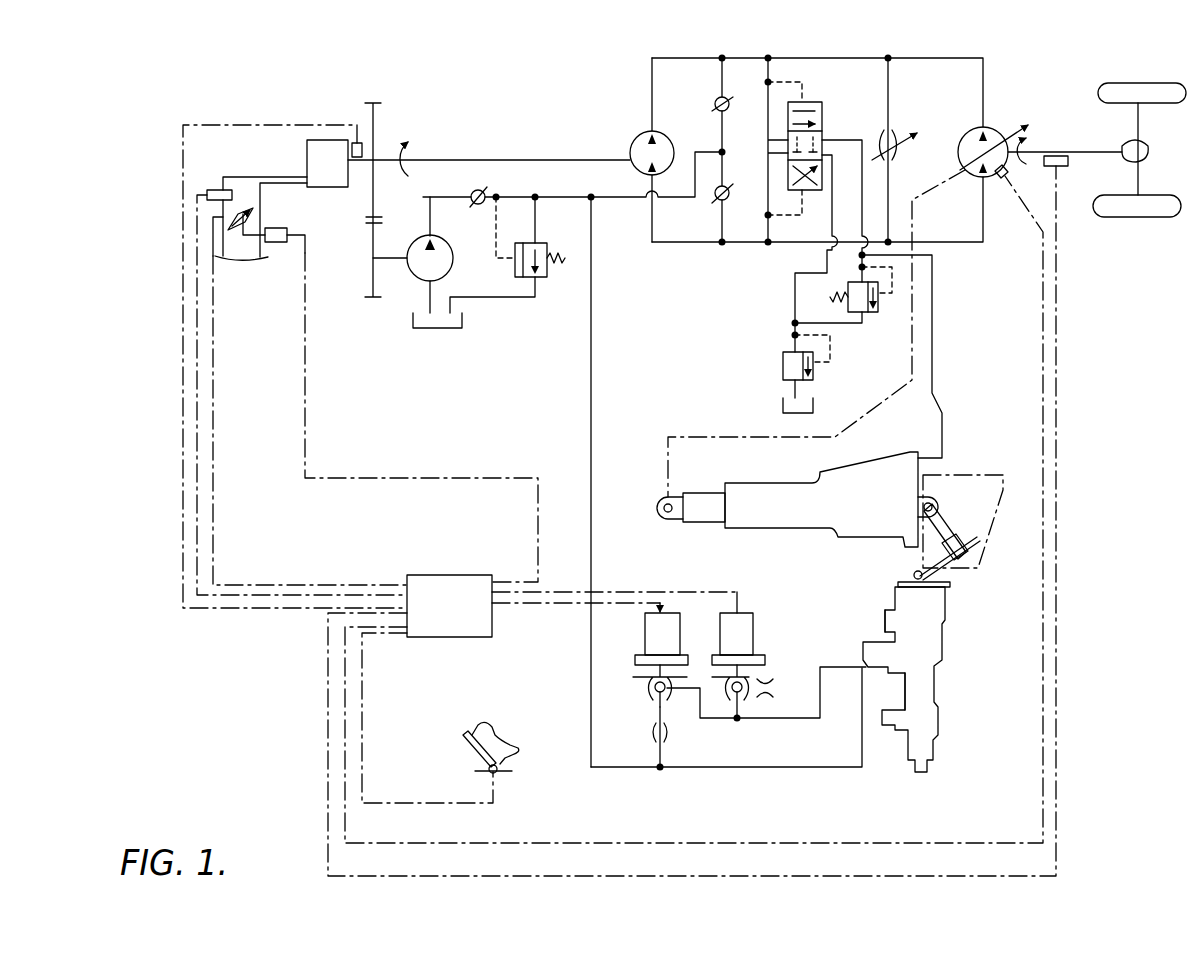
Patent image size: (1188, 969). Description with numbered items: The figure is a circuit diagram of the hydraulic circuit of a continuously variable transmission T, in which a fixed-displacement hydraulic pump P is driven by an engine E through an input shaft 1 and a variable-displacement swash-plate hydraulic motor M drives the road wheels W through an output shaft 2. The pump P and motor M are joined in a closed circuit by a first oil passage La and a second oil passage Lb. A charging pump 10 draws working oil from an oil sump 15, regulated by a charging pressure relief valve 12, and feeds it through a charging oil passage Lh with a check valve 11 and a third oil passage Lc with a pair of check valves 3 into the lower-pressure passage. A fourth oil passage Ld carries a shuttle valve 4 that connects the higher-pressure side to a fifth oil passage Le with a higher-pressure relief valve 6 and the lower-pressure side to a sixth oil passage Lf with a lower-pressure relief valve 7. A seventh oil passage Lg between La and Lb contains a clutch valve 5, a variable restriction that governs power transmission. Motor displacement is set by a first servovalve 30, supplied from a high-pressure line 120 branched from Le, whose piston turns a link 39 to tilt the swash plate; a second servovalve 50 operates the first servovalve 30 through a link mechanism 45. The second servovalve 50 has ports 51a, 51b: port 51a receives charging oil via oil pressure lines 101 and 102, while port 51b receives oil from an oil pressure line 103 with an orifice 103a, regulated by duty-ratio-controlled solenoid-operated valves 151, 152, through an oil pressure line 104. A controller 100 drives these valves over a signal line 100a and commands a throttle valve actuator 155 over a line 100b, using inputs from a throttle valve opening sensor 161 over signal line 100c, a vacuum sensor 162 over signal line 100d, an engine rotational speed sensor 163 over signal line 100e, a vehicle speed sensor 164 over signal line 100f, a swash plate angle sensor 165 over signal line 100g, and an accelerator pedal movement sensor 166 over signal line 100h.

The input shaft 1 is at (543, 160).
The output shaft 2 is at (1053, 152).
The check valves 3 is at (714, 98).
The shuttle valve 4 is at (808, 102).
The clutch valve 5 is at (896, 151).
The higher-pressure relief valve 6 is at (879, 312).
The lower-pressure relief valve 7 is at (783, 369).
The charging pump 10 is at (453, 266).
The check valve 11 is at (470, 192).
The charging pressure relief valve 12 is at (546, 243).
The oil sump 15 is at (464, 320).
The first servovalve 30 is at (778, 542).
The link 39 is at (908, 368).
The link mechanism 45 is at (950, 523).
The second servovalve 50 is at (882, 597).
The port 51a is at (884, 632).
The port 51b is at (891, 686).
The controller 100 is at (437, 575).
The signal line 100a is at (633, 592).
The line 100b is at (445, 478).
The signal line 100c is at (318, 585).
The signal line 100d is at (292, 595).
The signal line 100e is at (268, 612).
The signal line 100f is at (328, 752).
The signal line 100g is at (345, 733).
The signal line 100h is at (365, 721).
The oil pressure line 101 is at (593, 310).
The oil pressure line 102 is at (840, 768).
The oil pressure line 103 is at (659, 754).
The orifice 103a is at (670, 738).
The oil pressure line 104 is at (765, 719).
The high-pressure line 120 is at (933, 339).
The solenoid-operated valve 151 is at (645, 641).
The solenoid-operated valve 152 is at (754, 631).
The throttle valve actuator 155 is at (280, 228).
The engine throttle valve opening sensor 161 is at (255, 203).
The vacuum sensor 162 is at (212, 190).
The engine rotational speed sensor 163 is at (357, 143).
The vehicle speed sensor 164 is at (1068, 162).
The swash plate angle sensor 165 is at (998, 180).
The accelerator pedal movement sensor 166 is at (500, 771).
The engine E is at (307, 154).
The hydraulic pump P is at (637, 136).
The hydraulic motor M is at (995, 129).
The continuously variable transmission T is at (942, 54).
The road wheels W is at (1145, 76).
The first oil passage La is at (704, 241).
The second oil passage Lb is at (692, 57).
The third oil passage Lc is at (724, 130).
The fourth oil passage Ld is at (770, 70).
The fifth oil passage Le is at (861, 144).
The sixth oil passage Lf is at (797, 300).
The seventh oil passage Lg is at (890, 92).
The charging oil passage Lh is at (612, 199).